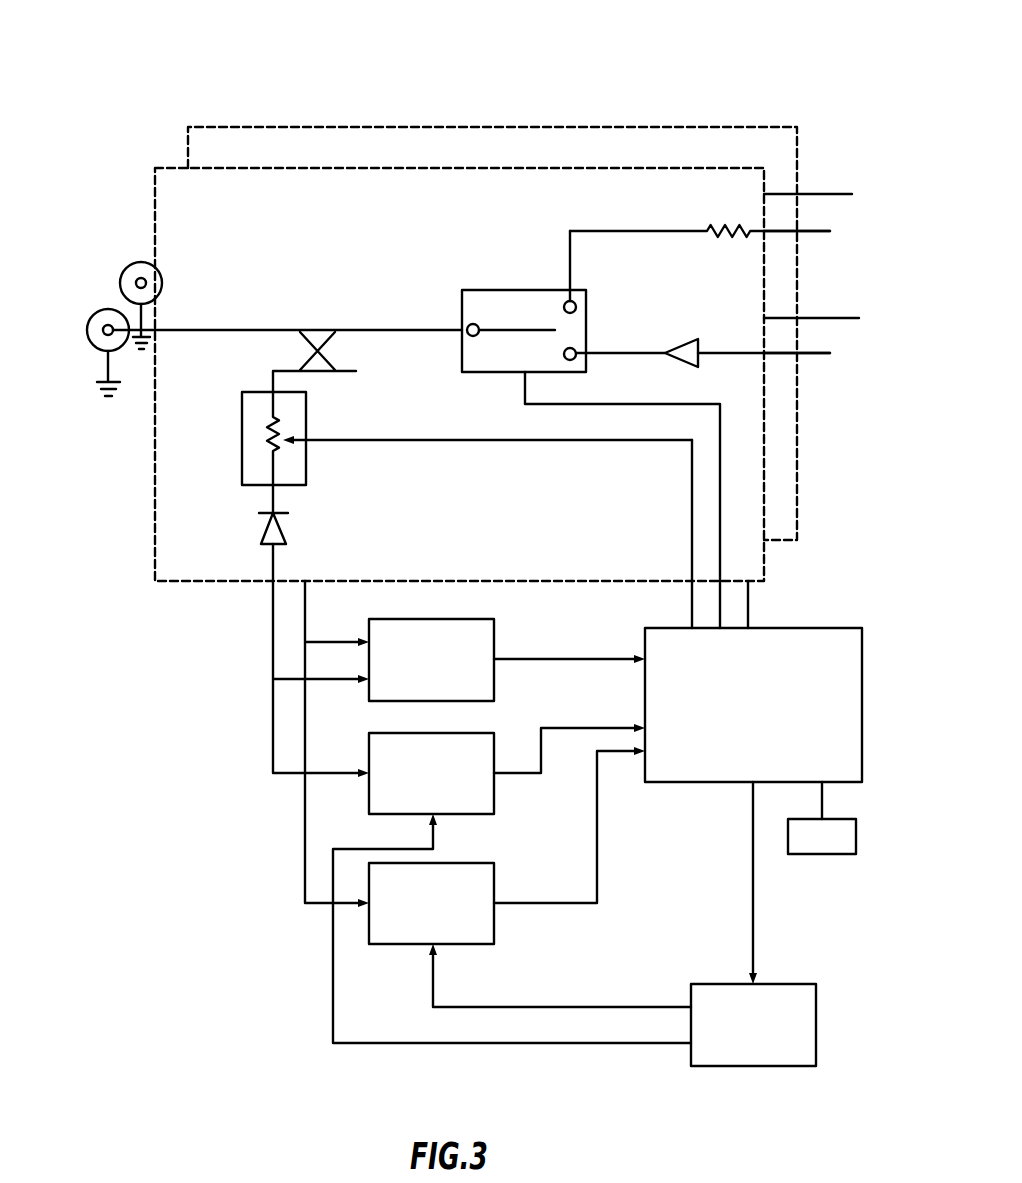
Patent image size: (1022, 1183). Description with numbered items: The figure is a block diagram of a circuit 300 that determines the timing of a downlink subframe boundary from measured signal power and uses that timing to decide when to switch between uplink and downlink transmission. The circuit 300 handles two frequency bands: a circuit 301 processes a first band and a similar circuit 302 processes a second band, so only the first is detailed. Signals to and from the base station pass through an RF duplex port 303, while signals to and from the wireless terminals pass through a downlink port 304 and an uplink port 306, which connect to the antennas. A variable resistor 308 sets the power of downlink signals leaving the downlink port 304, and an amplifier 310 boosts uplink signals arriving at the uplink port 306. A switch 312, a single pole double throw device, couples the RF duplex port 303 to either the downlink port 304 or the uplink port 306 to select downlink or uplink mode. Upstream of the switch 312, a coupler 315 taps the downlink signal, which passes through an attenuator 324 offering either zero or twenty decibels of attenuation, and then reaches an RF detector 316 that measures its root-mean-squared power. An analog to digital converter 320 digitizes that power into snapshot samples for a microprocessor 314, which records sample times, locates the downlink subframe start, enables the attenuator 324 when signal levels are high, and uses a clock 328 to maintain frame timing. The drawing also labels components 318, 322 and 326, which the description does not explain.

The circuit 300 is at (104, 57).
The circuit 301 is at (167, 167).
The circuit 302 is at (303, 127).
The RF duplex port 303 is at (92, 346).
The downlink port 304 is at (818, 232).
The uplink port 306 is at (810, 355).
The variable resistor 308 is at (718, 228).
The amplifier 310 is at (684, 345).
The switch 312 is at (505, 289).
The microprocessor 314 is at (800, 627).
The coupler 315 is at (316, 331).
The RF detector 316 is at (290, 533).
The comparator band 1 318 is at (495, 792).
The analog to digital converter 320 is at (455, 618).
The DAC 322 is at (762, 1067).
The attenuator 324 is at (306, 418).
The comparator band 2 326 is at (495, 890).
The clock 328 is at (822, 855).